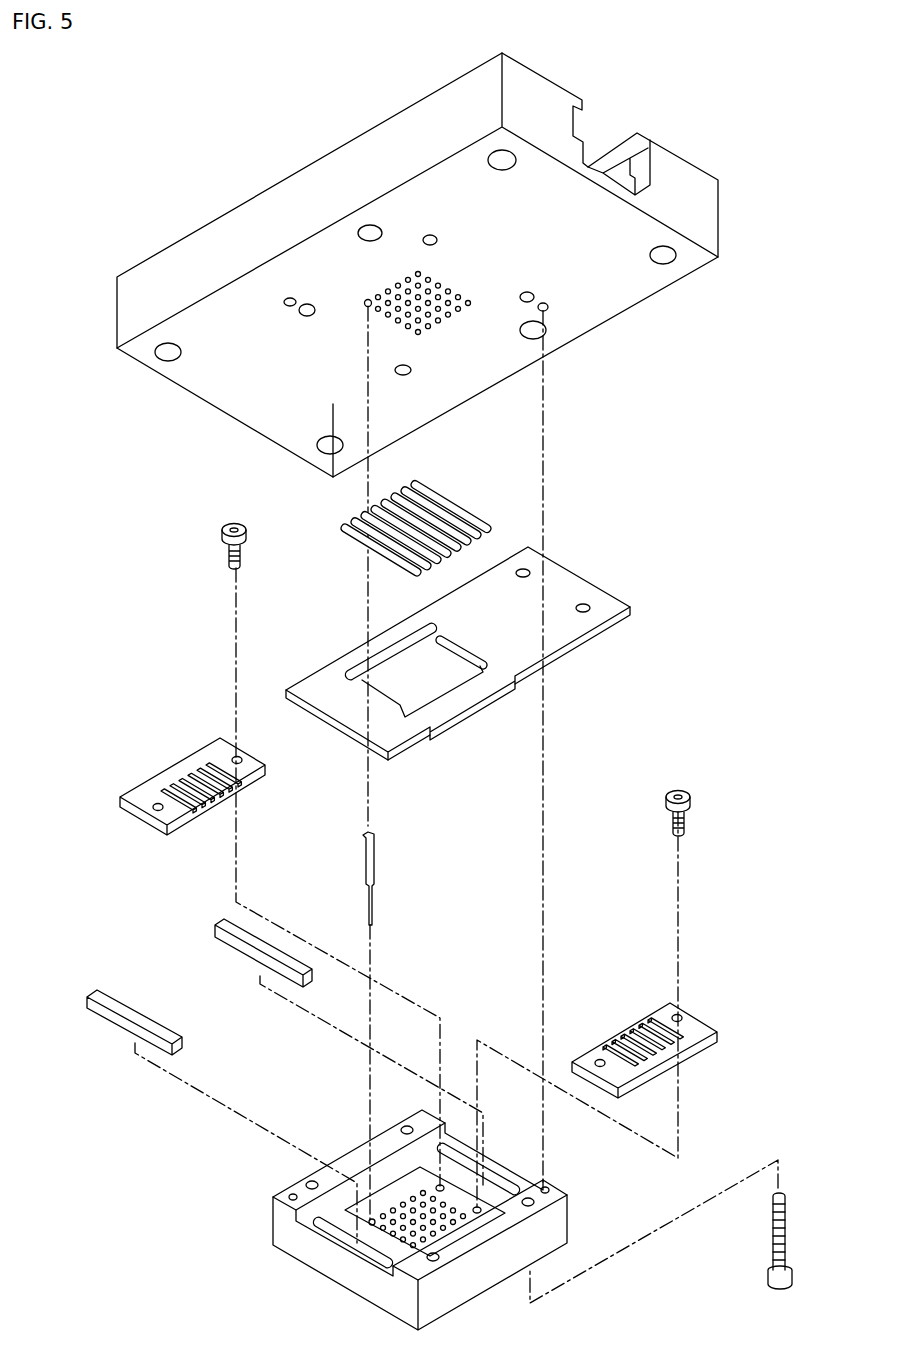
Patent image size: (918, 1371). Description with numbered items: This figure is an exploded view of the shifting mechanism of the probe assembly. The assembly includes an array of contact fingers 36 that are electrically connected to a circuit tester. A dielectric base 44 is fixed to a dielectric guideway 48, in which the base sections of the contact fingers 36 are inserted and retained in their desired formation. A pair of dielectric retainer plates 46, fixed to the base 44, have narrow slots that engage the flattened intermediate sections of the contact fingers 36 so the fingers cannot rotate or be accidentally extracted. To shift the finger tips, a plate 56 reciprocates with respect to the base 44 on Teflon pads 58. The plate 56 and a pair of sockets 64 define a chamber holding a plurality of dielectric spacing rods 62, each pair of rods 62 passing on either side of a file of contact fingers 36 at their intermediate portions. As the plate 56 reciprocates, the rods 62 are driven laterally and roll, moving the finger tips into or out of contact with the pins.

The contact fingers 36 is at (375, 879).
The dielectric base 44 is at (275, 1205).
The dielectric retainer plates 46 is at (178, 768).
The dielectric guideway 48 is at (287, 185).
The plate 56 is at (575, 578).
The Teflon pads 58 is at (215, 926).
The dielectric spacing rods 62 is at (458, 514).
The sockets 64 is at (412, 644).